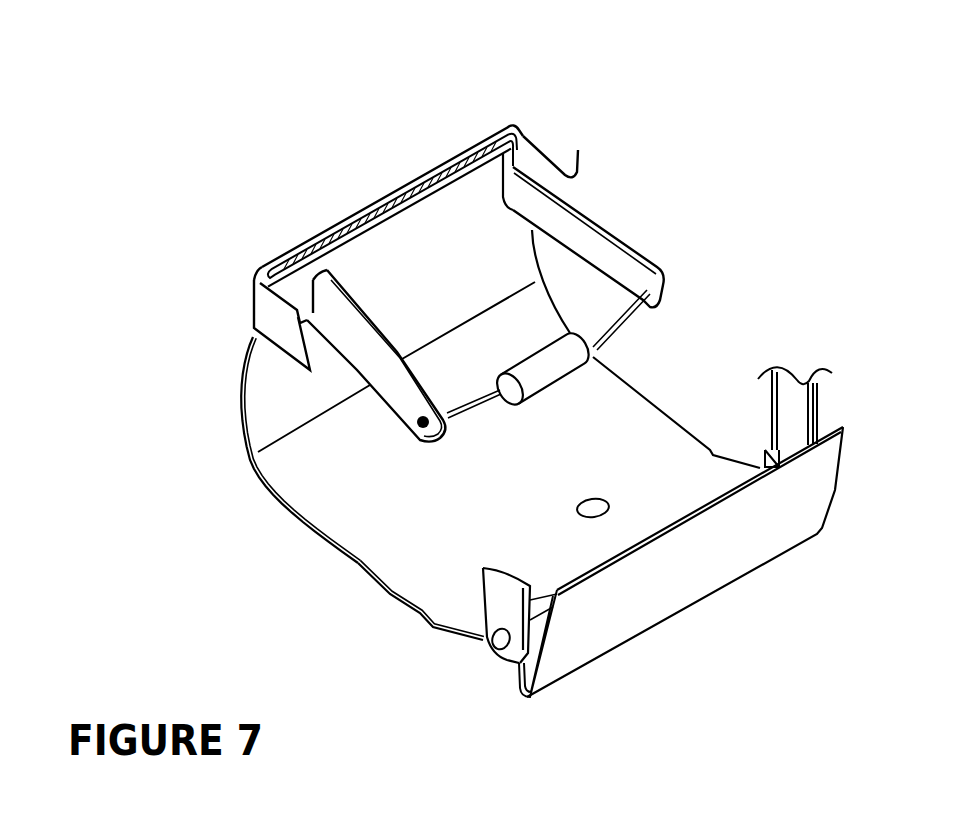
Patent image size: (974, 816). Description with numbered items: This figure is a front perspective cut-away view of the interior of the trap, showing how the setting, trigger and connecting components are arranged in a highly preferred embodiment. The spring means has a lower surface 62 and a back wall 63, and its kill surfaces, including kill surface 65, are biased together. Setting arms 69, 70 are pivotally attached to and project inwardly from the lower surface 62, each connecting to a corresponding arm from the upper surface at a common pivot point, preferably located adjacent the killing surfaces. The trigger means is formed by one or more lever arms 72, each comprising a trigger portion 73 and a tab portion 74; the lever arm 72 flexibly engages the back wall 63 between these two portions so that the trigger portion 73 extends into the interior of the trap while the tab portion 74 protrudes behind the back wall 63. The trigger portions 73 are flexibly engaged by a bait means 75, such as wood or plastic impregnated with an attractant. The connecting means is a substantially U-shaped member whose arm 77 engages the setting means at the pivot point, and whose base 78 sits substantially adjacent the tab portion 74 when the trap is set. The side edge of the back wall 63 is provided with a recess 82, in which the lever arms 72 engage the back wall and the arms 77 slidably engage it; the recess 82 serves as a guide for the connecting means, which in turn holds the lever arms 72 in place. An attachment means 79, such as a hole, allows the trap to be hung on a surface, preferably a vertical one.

The lower surface 62 is at (417, 582).
The back wall 63 is at (262, 423).
The kill surface 65 is at (848, 430).
The setting arm 69 is at (498, 606).
The setting arm 70 is at (787, 397).
The lever arm 72 is at (404, 449).
The trigger portion 73 is at (607, 255).
The tab portion 74 is at (290, 257).
The bait means 75 is at (555, 360).
The arm of connecting member 77 is at (537, 167).
The base of connecting member 78 is at (265, 268).
The attachment means 79 is at (606, 500).
The recess 82 is at (237, 320).